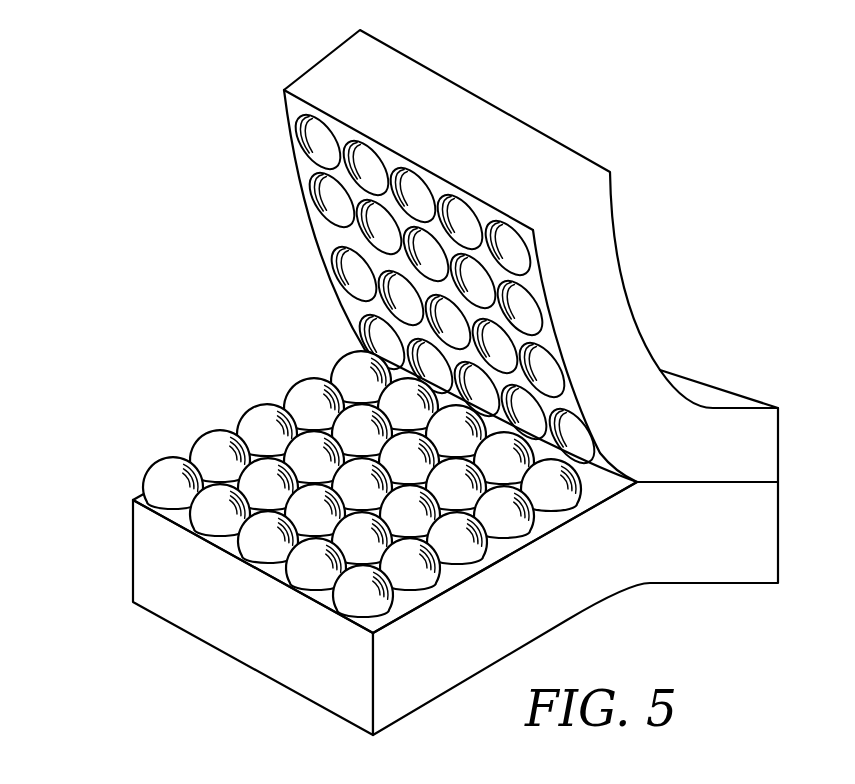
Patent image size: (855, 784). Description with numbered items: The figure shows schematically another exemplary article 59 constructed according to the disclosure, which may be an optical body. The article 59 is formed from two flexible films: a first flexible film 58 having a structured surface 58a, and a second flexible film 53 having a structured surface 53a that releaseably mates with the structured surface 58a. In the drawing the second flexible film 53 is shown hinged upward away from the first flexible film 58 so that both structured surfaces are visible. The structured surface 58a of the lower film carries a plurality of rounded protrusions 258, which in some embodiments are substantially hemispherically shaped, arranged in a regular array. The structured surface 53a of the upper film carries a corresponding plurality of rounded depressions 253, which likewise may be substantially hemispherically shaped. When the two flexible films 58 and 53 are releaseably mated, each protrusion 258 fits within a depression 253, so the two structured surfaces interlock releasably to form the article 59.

The article 59 is at (405, 373).
The second flexible film 53 is at (493, 246).
The structured surface 53a is at (422, 291).
The rounded depressions 253 is at (331, 203).
The first flexible film 58 is at (405, 543).
The structured surface 58a is at (372, 492).
The rounded protrusions 258 is at (344, 484).